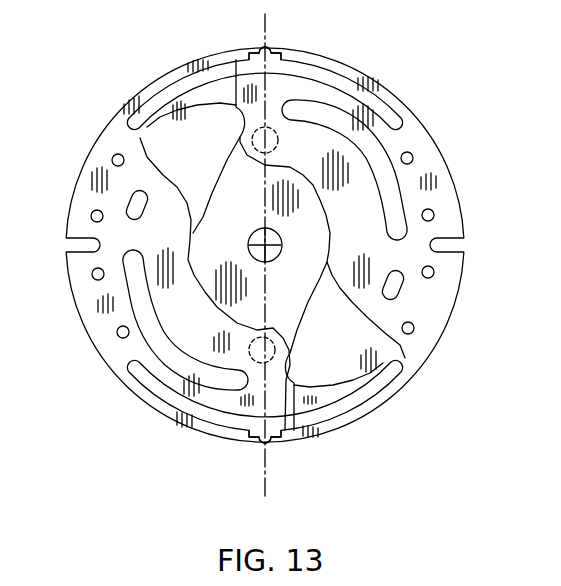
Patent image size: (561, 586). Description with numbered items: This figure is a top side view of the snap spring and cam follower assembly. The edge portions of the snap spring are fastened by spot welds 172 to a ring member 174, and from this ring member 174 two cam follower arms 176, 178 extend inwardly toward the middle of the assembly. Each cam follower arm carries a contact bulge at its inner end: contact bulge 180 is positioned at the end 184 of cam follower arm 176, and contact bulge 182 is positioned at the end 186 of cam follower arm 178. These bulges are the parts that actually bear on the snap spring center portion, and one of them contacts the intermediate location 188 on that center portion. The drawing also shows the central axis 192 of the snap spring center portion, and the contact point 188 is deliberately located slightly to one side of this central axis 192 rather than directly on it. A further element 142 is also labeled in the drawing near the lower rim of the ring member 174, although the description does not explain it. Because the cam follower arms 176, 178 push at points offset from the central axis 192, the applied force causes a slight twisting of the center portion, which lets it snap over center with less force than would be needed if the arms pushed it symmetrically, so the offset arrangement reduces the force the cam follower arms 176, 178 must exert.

The lower arcuate slot 142 is at (370, 412).
The spot welds 172 is at (434, 215).
The ring member 174 is at (437, 303).
The cam follower arm 176 is at (357, 185).
The cam follower arm 178 is at (154, 410).
The contact bulge 180 is at (278, 140).
The contact bulge 182 is at (250, 358).
The end 184 is at (234, 58).
The end 186 is at (283, 441).
The intermediate location 188 is at (137, 103).
The central axis 192 is at (266, 34).